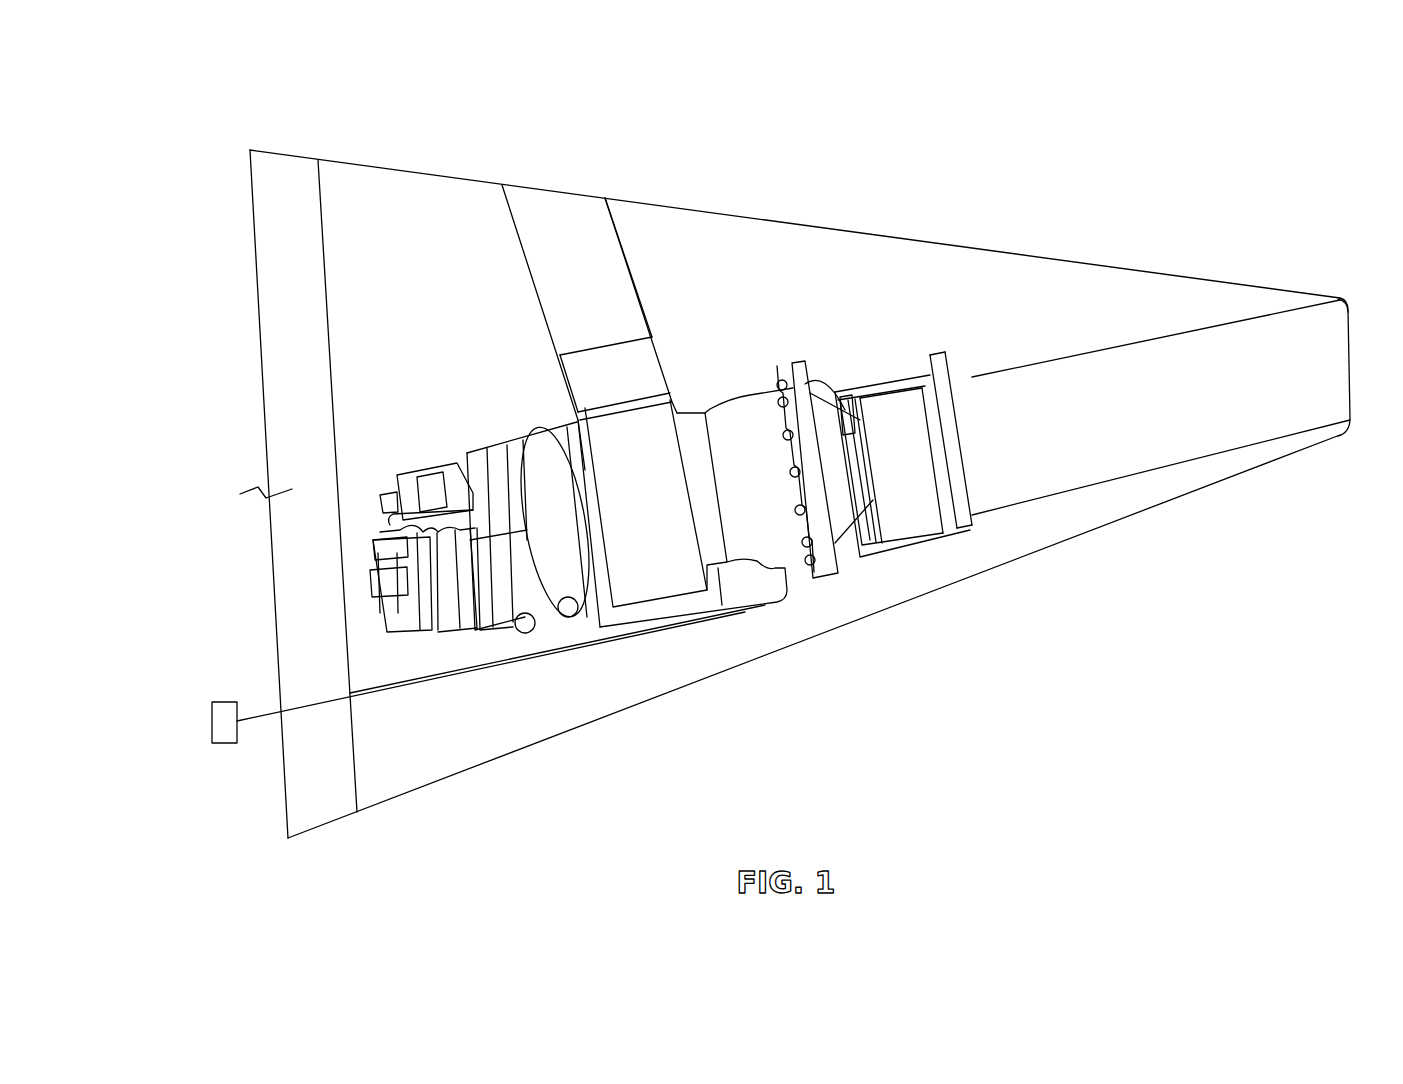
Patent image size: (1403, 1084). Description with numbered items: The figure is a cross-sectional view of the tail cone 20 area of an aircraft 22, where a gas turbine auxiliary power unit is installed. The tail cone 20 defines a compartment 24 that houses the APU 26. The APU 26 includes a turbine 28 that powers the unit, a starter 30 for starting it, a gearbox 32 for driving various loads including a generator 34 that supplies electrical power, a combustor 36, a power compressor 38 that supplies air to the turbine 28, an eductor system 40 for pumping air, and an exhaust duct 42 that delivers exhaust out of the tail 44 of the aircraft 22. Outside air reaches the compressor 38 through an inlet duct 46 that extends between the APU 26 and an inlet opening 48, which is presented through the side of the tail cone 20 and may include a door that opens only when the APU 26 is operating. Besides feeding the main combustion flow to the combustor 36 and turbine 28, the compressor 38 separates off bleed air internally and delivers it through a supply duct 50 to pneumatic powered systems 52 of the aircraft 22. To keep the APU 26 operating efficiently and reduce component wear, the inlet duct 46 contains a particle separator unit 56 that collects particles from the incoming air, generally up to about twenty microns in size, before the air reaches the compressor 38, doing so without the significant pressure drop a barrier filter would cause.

The tail cone 20 is at (1152, 270).
The aircraft 22 is at (283, 170).
The compartment 24 is at (962, 263).
The APU 26 is at (697, 390).
The turbine 28 is at (817, 388).
The starter 30 is at (420, 484).
The gearbox 32 is at (443, 625).
The generator 34 is at (420, 630).
The combustor 36 is at (750, 398).
The power compressor 38 is at (630, 517).
The eductor system 40 is at (884, 372).
The exhaust duct 42 is at (1192, 462).
The tail 44 is at (1342, 298).
The inlet duct 46 is at (632, 258).
The inlet opening 48 is at (560, 212).
The supply duct 50 is at (573, 650).
The pneumatic powered systems 52 is at (222, 745).
The particle separator unit 56 is at (566, 380).